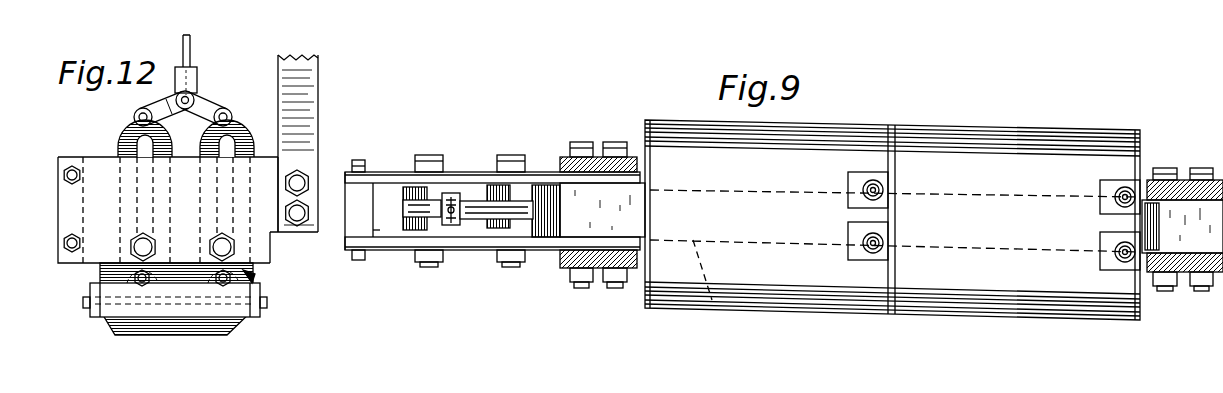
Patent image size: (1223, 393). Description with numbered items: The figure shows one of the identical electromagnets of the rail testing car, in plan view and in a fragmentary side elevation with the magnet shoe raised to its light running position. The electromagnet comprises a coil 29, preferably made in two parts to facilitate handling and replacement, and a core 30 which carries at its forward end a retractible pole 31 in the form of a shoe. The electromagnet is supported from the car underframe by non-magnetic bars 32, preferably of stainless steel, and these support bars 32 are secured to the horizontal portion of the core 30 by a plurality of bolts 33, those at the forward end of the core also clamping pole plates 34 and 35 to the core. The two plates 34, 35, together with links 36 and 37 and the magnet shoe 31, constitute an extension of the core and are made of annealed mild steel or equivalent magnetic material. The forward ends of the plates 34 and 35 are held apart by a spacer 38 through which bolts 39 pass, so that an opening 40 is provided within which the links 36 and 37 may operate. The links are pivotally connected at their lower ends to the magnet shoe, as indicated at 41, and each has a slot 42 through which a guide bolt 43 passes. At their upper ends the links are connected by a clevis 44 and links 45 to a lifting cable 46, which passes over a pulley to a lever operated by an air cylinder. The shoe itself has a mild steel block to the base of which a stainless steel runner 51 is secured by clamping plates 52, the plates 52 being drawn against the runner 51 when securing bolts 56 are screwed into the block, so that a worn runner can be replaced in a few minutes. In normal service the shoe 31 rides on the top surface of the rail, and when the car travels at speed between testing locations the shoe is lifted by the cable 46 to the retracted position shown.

In FIG. 9, the coil 29 is at (917, 138).
In FIG. 9, the core 30 is at (633, 221).
In FIG. 12, the retractible pole 31 is at (255, 281).
In FIG. 12, the non-magnetic bars 32 is at (314, 84).
In FIG. 9, the non-magnetic bars 32 is at (611, 165).
In FIG. 9, the bolts 33 is at (617, 292).
In FIG. 12, the pole plate 34 is at (261, 234).
In FIG. 9, the pole plate 34 is at (550, 247).
In FIG. 9, the pole plate 35 is at (537, 180).
In FIG. 12, the link 36 is at (121, 151).
In FIG. 9, the link 36 is at (473, 187).
In FIG. 12, the link 37 is at (250, 141).
In FIG. 9, the link 37 is at (546, 188).
In FIG. 12, the spacer 38 is at (71, 158).
In FIG. 9, the spacer 38 is at (364, 192).
In FIG. 12, the bolts 39 is at (76, 237).
In FIG. 9, the bolts 39 is at (357, 160).
In FIG. 9, the opening 40 is at (383, 228).
In FIG. 12, the pivotal connection 41 is at (214, 281).
In FIG. 12, the slot 42 is at (221, 143).
In FIG. 12, the guide bolt 43 is at (214, 246).
In FIG. 9, the guide bolt 43 is at (428, 267).
In FIG. 12, the clevis 44 is at (158, 108).
In FIG. 9, the clevis 44 is at (437, 220).
In FIG. 12, the links 45 is at (211, 105).
In FIG. 9, the links 45 is at (473, 220).
In FIG. 12, the lifting cable 46 is at (191, 49).
In FIG. 9, the lifting cable 46 is at (453, 196).
In FIG. 12, the runner 51 is at (212, 332).
In FIG. 12, the clamping plates 52 is at (266, 300).
In FIG. 12, the securing bolts 56 is at (268, 307).